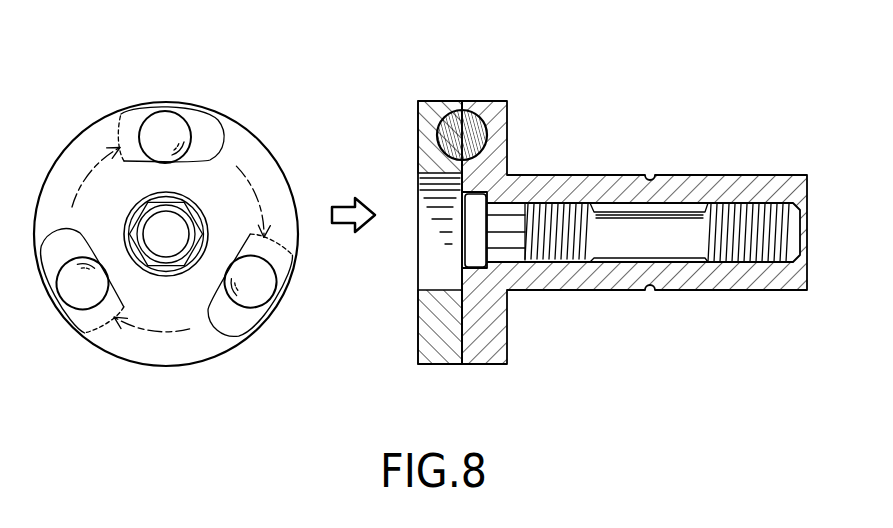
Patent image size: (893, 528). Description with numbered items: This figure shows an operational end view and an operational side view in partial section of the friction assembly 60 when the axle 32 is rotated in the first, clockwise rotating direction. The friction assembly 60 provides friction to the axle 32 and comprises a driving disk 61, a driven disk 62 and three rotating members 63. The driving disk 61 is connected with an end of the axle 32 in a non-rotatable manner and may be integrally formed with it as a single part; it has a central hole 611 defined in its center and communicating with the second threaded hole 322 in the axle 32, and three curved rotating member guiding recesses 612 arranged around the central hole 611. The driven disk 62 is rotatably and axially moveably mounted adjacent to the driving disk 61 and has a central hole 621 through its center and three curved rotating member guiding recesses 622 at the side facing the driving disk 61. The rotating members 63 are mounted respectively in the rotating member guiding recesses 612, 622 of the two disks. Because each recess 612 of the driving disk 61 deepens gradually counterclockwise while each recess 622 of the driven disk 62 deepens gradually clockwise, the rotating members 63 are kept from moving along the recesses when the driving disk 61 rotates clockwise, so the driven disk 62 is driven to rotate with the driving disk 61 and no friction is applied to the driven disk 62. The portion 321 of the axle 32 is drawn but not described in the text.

The axle 32 is at (647, 185).
The threaded section of bolt 321 is at (720, 262).
The second threaded hole 322 is at (575, 260).
The friction assembly 60 is at (458, 77).
The driving disk 61 is at (100, 356).
The central hole 611 is at (470, 250).
The rotating member guiding recess 612 is at (205, 132).
The driven disk 62 is at (432, 100).
The central hole 621 is at (420, 283).
The rotating member guiding recess 622 is at (120, 118).
The rotating member 63 is at (158, 125).